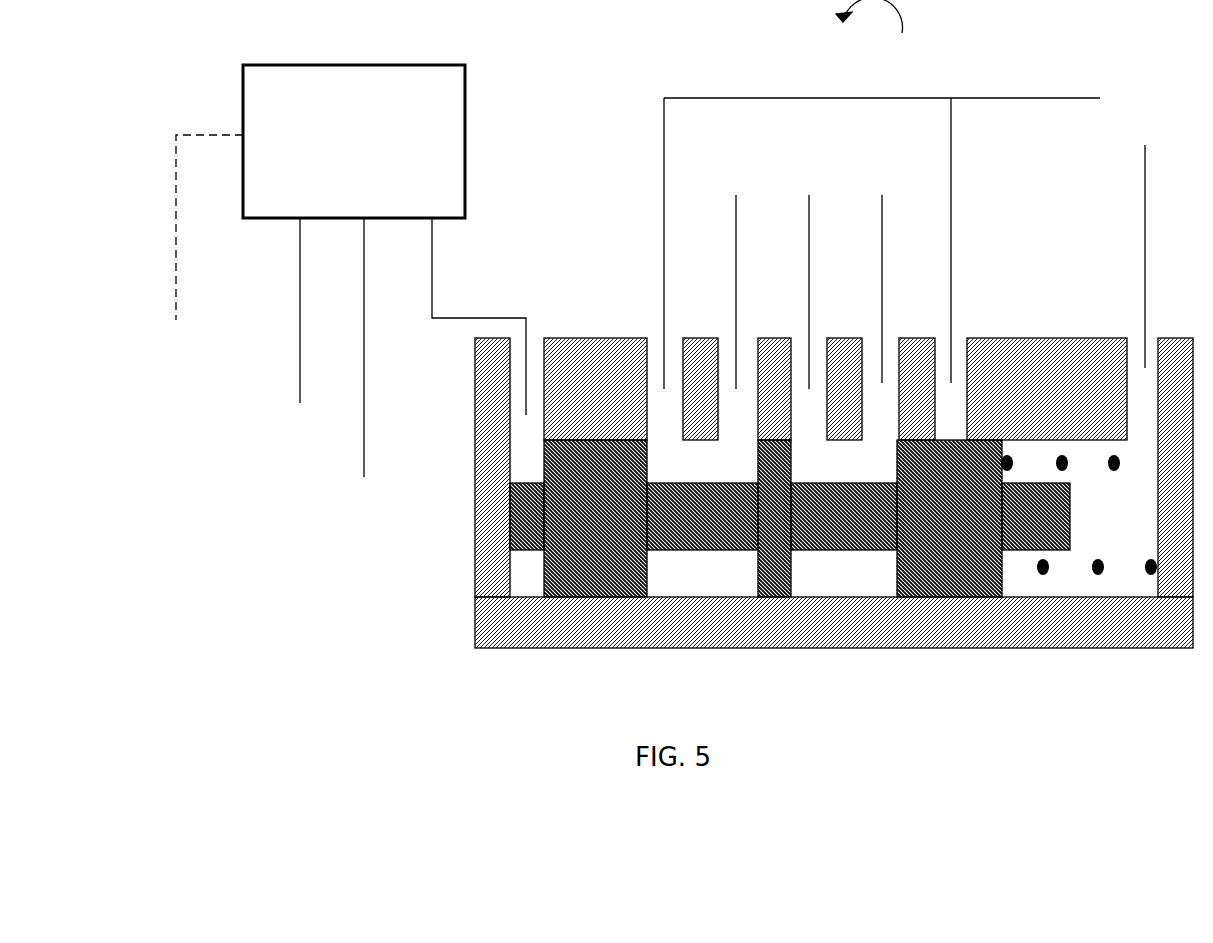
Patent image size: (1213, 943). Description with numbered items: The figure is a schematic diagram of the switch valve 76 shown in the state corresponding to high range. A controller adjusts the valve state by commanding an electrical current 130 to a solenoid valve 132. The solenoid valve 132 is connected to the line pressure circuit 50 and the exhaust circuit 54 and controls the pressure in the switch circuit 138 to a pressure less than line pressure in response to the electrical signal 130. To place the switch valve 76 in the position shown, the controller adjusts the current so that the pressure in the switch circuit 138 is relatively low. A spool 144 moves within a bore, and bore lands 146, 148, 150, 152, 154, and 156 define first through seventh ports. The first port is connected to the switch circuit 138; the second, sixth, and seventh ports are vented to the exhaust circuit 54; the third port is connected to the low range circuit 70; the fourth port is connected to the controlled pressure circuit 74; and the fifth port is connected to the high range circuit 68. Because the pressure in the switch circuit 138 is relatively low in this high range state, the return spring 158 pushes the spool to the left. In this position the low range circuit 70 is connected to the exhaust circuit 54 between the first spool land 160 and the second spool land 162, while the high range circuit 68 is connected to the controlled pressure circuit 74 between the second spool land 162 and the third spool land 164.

The solenoid valve 132 is at (354, 141).
The electrical current 130 is at (200, 249).
The exhaust circuit 54 is at (718, 273).
The line pressure circuit 50 is at (363, 382).
The switch circuit 138 is at (462, 345).
The switch valve 76 is at (882, 194).
The low range circuit 70 is at (734, 262).
The controlled pressure circuit 74 is at (809, 262).
The high range circuit 68 is at (882, 260).
The first spool land 160 is at (543, 580).
The bore land 146 is at (604, 338).
The bore land 148 is at (712, 338).
The bore land 150 is at (780, 338).
The bore land 152 is at (850, 338).
The bore land 154 is at (921, 338).
The bore land 156 is at (1070, 338).
The spool 144 is at (664, 550).
The second spool land 162 is at (757, 583).
The third spool land 164 is at (897, 580).
The return spring 158 is at (1043, 567).